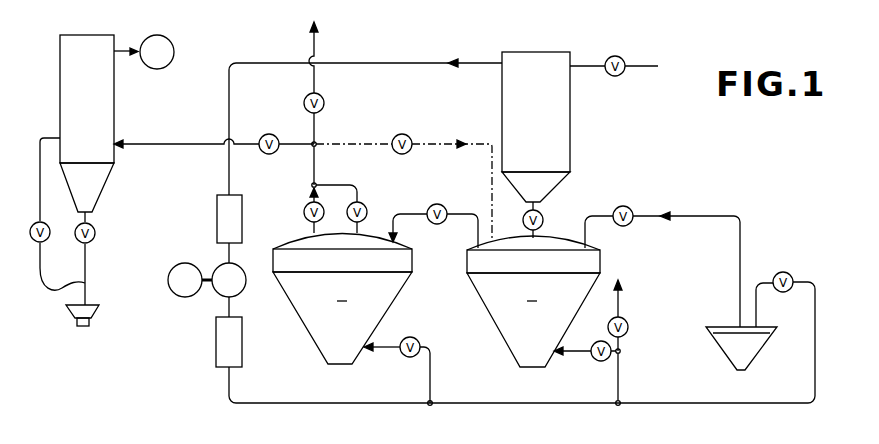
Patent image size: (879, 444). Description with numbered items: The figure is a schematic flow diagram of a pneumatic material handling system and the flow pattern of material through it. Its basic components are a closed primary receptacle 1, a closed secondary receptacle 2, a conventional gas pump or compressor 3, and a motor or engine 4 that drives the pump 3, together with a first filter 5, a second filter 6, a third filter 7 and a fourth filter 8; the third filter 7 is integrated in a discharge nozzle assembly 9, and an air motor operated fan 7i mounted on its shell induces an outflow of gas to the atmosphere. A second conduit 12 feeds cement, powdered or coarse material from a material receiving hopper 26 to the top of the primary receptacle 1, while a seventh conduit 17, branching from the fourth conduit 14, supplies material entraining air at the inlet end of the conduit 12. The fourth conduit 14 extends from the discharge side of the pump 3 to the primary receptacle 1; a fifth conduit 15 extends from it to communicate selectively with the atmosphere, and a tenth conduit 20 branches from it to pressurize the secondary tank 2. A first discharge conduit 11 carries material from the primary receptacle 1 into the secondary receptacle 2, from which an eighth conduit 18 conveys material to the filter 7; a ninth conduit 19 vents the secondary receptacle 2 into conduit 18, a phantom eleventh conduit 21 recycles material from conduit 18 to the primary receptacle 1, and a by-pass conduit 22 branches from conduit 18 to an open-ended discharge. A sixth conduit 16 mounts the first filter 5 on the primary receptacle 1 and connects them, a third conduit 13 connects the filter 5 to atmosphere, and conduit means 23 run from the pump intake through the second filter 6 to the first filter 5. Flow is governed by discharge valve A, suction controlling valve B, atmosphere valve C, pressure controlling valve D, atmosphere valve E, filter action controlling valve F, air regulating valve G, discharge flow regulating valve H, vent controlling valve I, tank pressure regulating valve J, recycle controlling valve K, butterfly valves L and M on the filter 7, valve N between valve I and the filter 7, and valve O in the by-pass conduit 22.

The primary receptacle 1 is at (533, 301).
The secondary receptacle 2 is at (342, 299).
The gas pump or compressor 3 is at (246, 294).
The motor or engine 4 is at (168, 292).
The first filter 5 is at (570, 154).
The second filter 6 is at (216, 232).
The third filter 7 is at (114, 108).
The air motor operated fan 7i is at (172, 43).
The fourth filter 8 is at (214, 354).
The discharge nozzle assembly 9 is at (100, 190).
The first discharge conduit 11 is at (412, 206).
The second conduit 12 is at (706, 206).
The third conduit 13 is at (586, 64).
The fourth conduit 14 is at (620, 398).
The fifth conduit 15 is at (620, 308).
The sixth conduit 16 is at (537, 232).
The seventh conduit 17 is at (708, 402).
The eighth conduit 18 is at (160, 143).
The ninth conduit 19 is at (344, 180).
The tenth conduit 20 is at (433, 370).
The eleventh conduit 21 is at (362, 126).
The discharge by-pass conduit 22 is at (319, 40).
The conduit means 23 is at (432, 62).
The material receiving hopper 26 is at (758, 364).
The discharge valve A is at (454, 206).
The suction controlling valve B is at (620, 206).
The communication-to-atmosphere-controlling valve C is at (632, 58).
The pressure controlling valve D is at (594, 342).
The communication-to-atmosphere-controlling valve E is at (630, 332).
The filter action controlling valve F is at (522, 221).
The seventh valve G is at (788, 268).
The discharge flow regulating valve H is at (304, 200).
The vent controlling valve I is at (369, 200).
The tank pressure regulating valve J is at (416, 336).
The material recycle-controlling valve K is at (408, 135).
The twelfth valve L is at (96, 234).
The thirteenth system valve M is at (24, 234).
The fourteenth valve N is at (280, 134).
The fifteenth valve O is at (321, 108).